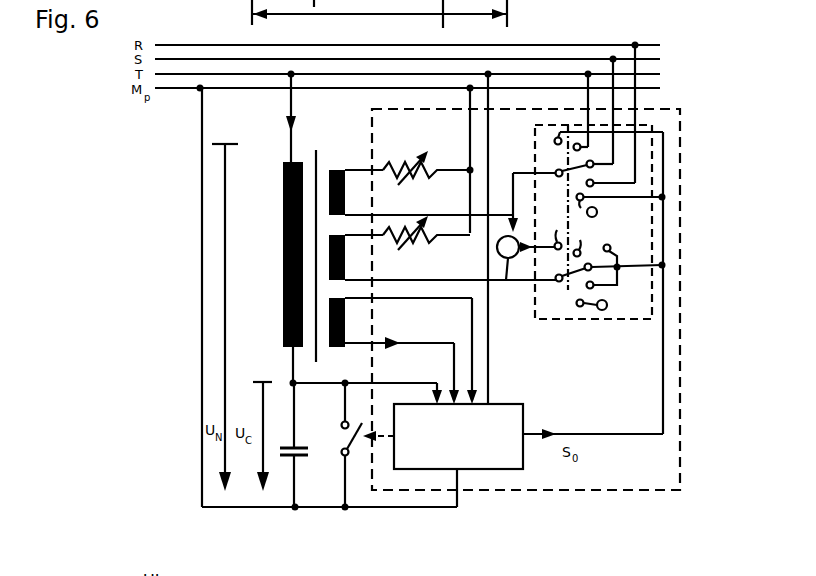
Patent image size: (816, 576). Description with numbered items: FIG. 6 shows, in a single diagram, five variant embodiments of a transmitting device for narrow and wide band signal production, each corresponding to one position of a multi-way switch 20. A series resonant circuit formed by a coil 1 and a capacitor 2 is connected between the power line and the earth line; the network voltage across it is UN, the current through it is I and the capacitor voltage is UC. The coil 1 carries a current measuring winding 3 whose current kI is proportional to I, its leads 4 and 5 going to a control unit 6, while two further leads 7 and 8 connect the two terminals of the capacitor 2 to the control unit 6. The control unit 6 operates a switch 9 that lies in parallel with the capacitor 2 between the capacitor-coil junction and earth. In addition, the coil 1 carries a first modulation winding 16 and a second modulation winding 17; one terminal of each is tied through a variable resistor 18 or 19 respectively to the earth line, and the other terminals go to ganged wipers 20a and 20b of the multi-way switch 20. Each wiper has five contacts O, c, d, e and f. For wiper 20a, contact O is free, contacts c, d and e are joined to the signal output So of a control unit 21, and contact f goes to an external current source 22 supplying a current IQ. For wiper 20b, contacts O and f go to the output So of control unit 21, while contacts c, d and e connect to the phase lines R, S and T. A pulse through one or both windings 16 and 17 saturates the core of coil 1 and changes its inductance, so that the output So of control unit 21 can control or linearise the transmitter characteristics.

The coil 1 is at (283, 318).
The capacitor 2 is at (300, 457).
The current measuring winding 3 is at (347, 321).
The lead 4 is at (437, 372).
The lead 5 is at (472, 343).
The control unit 6 is at (658, 480).
The lead 7 is at (315, 384).
The lead 8 is at (400, 508).
The switch 9 is at (352, 455).
The first modulation winding 16 is at (337, 170).
The second modulation winding 17 is at (345, 248).
The variable resistor 18 is at (392, 168).
The variable resistor 19 is at (400, 243).
The multi-way switch 20 is at (643, 310).
The wiper 20a is at (559, 285).
The wiper 20b is at (555, 170).
The control unit 21 is at (497, 470).
The external current source 22 is at (506, 281).